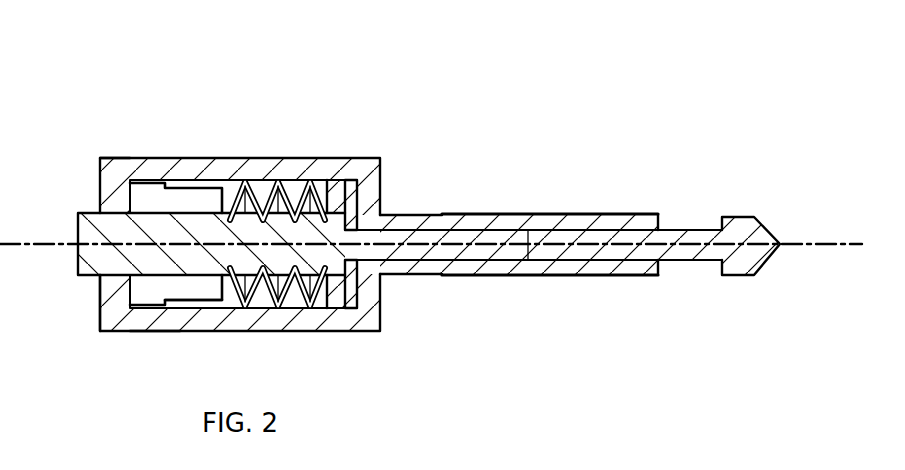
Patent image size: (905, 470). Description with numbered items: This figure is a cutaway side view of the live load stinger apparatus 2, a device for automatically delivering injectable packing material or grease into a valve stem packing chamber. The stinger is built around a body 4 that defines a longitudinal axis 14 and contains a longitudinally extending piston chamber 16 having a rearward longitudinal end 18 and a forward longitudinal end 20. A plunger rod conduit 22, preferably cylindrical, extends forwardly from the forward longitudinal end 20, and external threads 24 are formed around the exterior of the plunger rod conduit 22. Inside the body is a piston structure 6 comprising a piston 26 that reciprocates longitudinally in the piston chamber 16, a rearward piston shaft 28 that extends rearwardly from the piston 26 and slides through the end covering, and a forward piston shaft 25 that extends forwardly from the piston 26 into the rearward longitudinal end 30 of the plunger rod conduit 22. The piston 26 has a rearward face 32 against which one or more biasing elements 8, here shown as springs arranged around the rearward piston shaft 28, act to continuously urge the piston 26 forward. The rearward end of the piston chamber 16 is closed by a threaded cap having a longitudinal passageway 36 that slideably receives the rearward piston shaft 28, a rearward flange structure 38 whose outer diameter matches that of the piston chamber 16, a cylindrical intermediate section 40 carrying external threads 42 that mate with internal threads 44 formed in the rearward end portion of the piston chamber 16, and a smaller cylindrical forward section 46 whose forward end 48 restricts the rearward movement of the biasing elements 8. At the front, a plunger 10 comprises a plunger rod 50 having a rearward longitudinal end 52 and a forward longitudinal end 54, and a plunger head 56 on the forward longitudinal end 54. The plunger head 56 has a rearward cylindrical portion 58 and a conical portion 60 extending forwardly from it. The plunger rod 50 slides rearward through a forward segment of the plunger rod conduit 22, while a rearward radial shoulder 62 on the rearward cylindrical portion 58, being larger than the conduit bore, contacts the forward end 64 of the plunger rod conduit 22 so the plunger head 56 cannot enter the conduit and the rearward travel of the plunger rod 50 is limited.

The live load stinger apparatus 2 is at (223, 97).
The body 4 is at (360, 333).
The piston structure 6 is at (280, 229).
The biasing elements 8 is at (280, 229).
The plunger 10 is at (683, 233).
The longitudinal axis 14 is at (848, 245).
The piston chamber 16 is at (208, 312).
The rearward longitudinal end 18 is at (157, 333).
The forward longitudinal end 20 is at (533, 211).
The plunger rod conduit 22 is at (533, 211).
The external threads 24 is at (533, 211).
The forward piston shaft 25 is at (533, 211).
The piston 26 is at (280, 229).
The rearward piston shaft 28 is at (180, 224).
The rearward longitudinal end 30 is at (391, 275).
The rearward face 32 is at (280, 229).
The longitudinal passageway 36 is at (118, 240).
The rearward flange structure 38 is at (113, 158).
The cylindrical intermediate section 40 is at (159, 201).
The external threads 42 is at (148, 162).
The internal threads 44 is at (138, 308).
The cylindrical forward section 46 is at (185, 162).
The forward end 48 is at (230, 190).
The plunger rod 50 is at (662, 220).
The rearward longitudinal end 52 is at (382, 203).
The forward longitudinal end 54 is at (719, 219).
The plunger head 56 is at (763, 226).
The rearward cylindrical portion 58 is at (763, 226).
The conical portion 60 is at (763, 226).
The rearward radial shoulder 62 is at (763, 226).
The forward end 64 is at (683, 233).